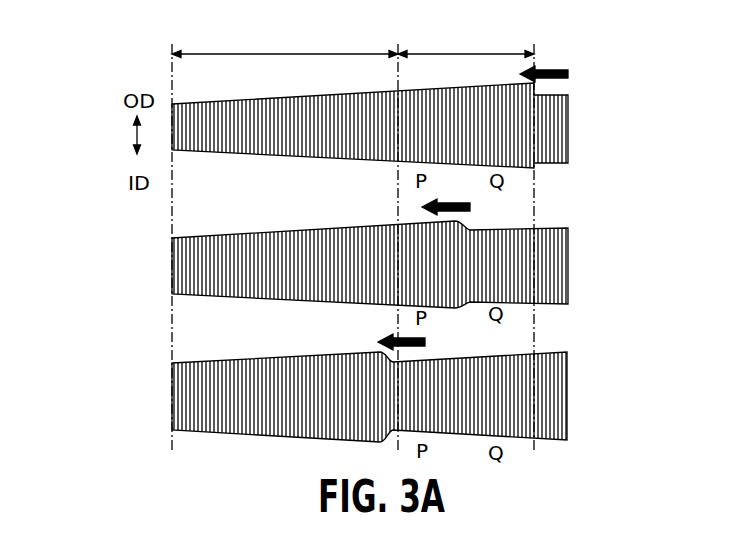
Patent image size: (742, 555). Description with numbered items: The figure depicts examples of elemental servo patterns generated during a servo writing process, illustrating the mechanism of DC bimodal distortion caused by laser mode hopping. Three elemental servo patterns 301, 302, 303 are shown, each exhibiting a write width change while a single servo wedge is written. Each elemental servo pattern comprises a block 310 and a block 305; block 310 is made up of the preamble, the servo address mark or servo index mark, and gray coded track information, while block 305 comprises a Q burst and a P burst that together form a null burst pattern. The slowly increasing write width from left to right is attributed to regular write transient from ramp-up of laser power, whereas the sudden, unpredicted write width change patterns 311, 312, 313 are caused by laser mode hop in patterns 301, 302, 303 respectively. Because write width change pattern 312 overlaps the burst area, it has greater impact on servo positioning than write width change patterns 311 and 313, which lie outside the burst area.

The elemental servo pattern 301 is at (586, 138).
The elemental servo pattern 302 is at (586, 273).
The elemental servo pattern 303 is at (586, 400).
The block 305 is at (466, 39).
The block 310 is at (285, 39).
The write width change pattern 311 is at (543, 93).
The write width change pattern 312 is at (474, 221).
The write width change pattern 313 is at (400, 360).